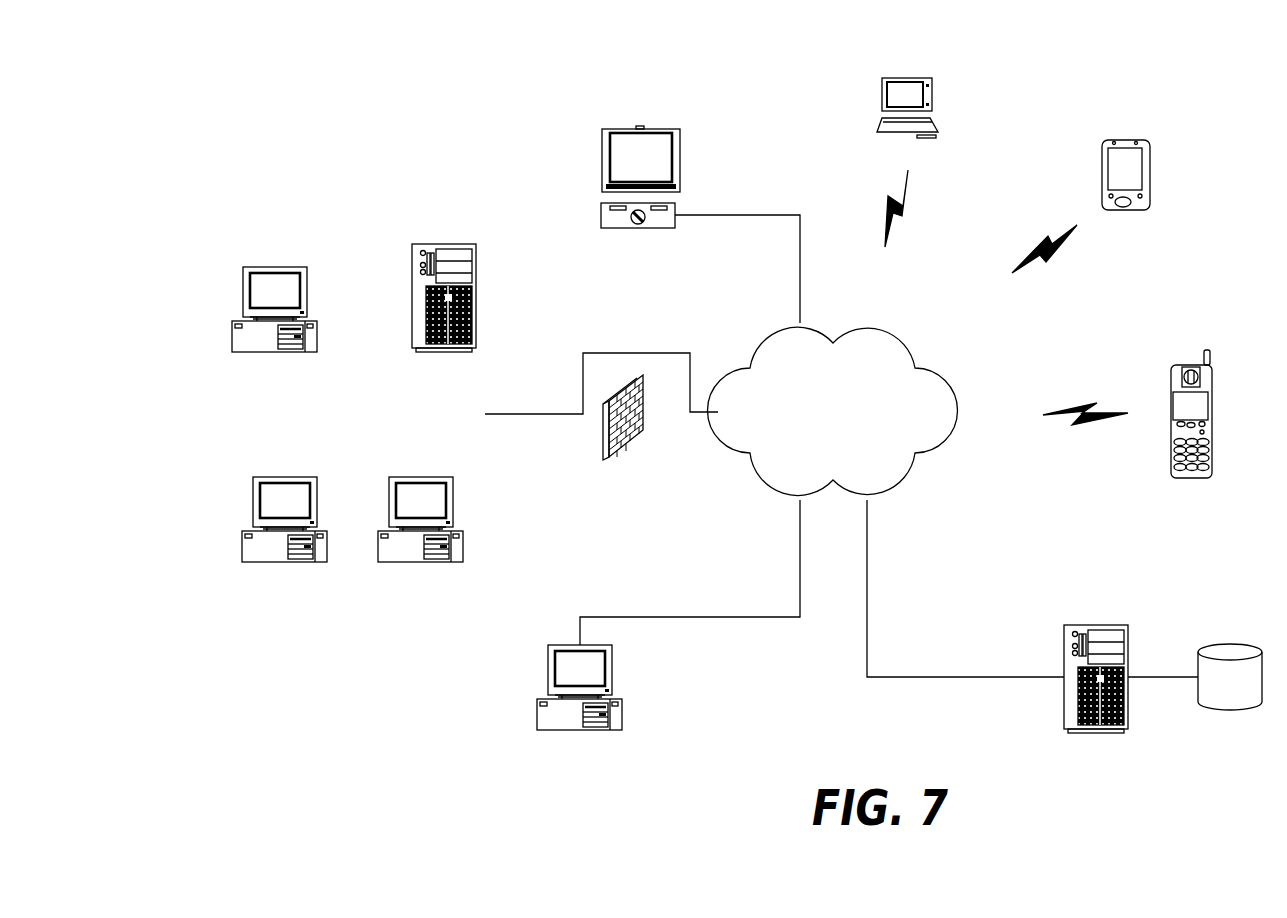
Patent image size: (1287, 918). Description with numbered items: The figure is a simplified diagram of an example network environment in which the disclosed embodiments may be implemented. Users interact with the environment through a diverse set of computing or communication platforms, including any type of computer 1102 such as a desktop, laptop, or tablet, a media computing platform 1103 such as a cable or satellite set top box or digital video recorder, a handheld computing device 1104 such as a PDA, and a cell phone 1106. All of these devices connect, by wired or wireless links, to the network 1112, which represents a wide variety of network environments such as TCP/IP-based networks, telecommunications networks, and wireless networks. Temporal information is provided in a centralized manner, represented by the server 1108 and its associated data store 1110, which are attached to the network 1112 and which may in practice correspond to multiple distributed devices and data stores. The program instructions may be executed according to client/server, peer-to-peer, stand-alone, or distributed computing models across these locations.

The computer 1102 is at (242, 297).
The media computing platform 1103 is at (600, 213).
The handheld computing device 1104 is at (1105, 140).
The cell phone 1106 is at (1175, 370).
The server 1108 is at (1077, 625).
The data store 1110 is at (1230, 645).
The network 1112 is at (768, 343).